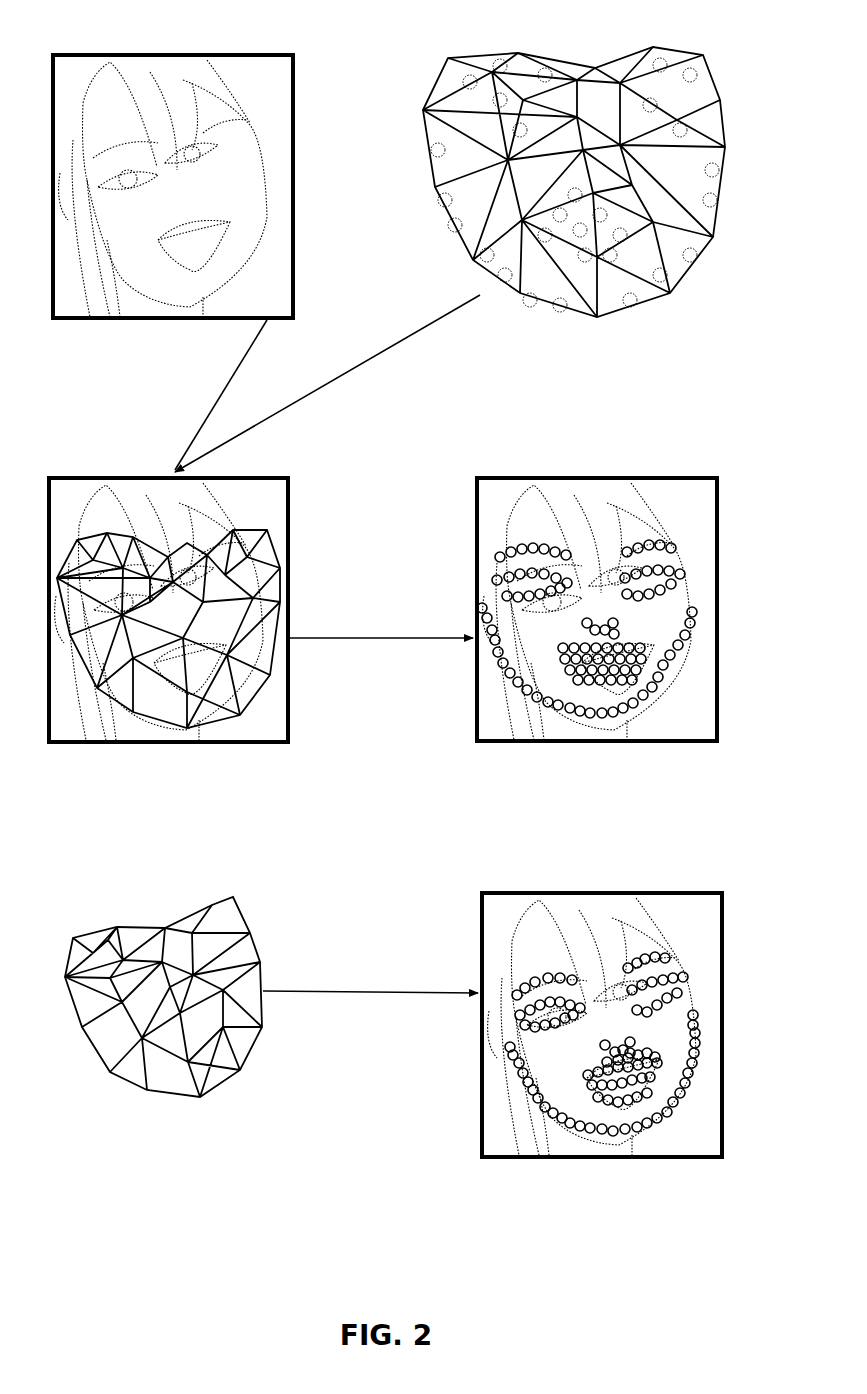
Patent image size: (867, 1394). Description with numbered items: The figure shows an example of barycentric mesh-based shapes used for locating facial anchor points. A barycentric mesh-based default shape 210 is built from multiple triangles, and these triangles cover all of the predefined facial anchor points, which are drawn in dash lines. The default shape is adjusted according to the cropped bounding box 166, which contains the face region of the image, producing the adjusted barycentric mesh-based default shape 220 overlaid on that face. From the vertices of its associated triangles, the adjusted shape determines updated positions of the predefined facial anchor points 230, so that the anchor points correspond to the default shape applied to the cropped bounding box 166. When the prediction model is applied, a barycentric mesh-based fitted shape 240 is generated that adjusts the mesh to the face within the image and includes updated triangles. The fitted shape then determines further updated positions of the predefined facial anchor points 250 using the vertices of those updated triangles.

The cropped bounding box 166 is at (159, 395).
The barycentric mesh-based default shape 210 is at (589, 401).
The adjusted barycentric mesh-based default shape 220 is at (161, 848).
The predefined facial anchor points 230 is at (587, 843).
The barycentric mesh-based fitted shape 240 is at (149, 1203).
The predefined facial anchor points 250 is at (591, 1241).